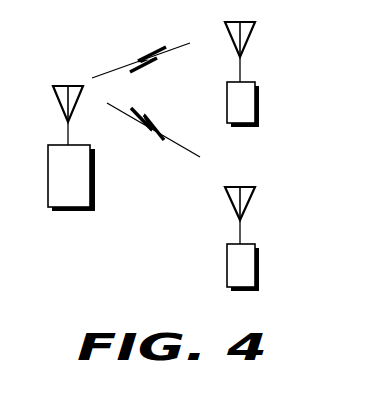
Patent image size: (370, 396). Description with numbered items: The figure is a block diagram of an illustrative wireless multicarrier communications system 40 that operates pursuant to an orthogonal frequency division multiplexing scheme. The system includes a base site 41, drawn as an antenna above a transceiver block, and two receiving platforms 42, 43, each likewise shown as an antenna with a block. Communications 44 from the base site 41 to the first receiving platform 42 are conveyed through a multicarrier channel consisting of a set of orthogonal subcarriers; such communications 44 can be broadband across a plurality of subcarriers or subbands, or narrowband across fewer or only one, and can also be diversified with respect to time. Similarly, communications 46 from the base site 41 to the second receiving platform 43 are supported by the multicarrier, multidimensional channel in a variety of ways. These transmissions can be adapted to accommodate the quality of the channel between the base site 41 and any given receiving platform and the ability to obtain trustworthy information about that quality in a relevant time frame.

The multicarrier communications system 40 is at (144, 291).
The base site 41 is at (78, 208).
The first receiving platform 42 is at (241, 125).
The second receiving platform 43 is at (241, 289).
The communications 44 is at (122, 66).
The communications 46 is at (190, 153).